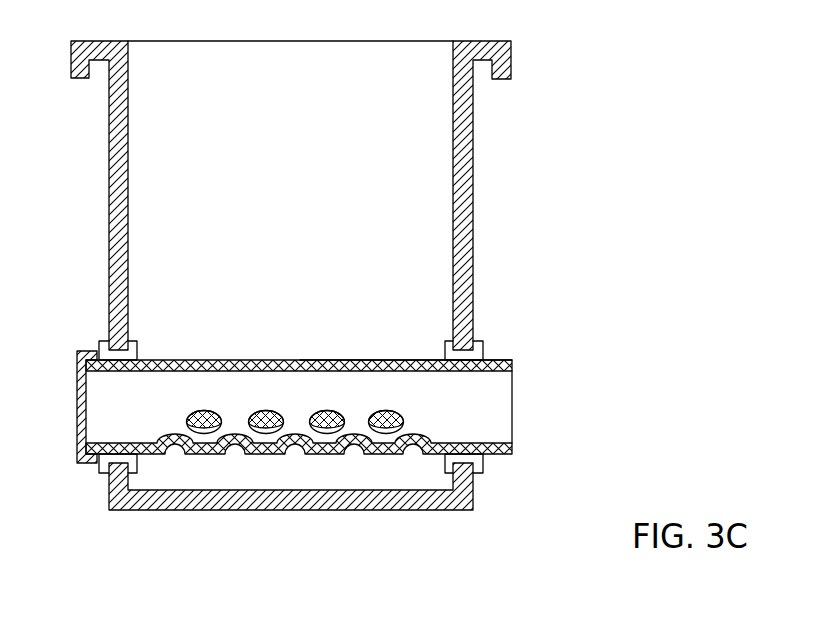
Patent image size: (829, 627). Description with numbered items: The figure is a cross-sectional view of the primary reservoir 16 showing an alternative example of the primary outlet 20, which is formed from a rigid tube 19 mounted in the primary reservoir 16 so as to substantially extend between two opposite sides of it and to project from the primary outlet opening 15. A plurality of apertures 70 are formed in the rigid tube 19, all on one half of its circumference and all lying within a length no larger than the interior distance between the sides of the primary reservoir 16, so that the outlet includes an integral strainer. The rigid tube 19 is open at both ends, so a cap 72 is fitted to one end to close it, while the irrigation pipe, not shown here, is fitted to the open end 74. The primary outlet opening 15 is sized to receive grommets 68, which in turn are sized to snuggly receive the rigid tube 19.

The primary reservoir 16 is at (110, 231).
The grommets 68 is at (100, 342).
The rigid tube 19 is at (202, 360).
The primary outlet opening 15 is at (433, 359).
The cap 72 is at (77, 396).
The primary outlet 20 is at (351, 437).
The open end 74 is at (503, 414).
The apertures 70 is at (208, 424).